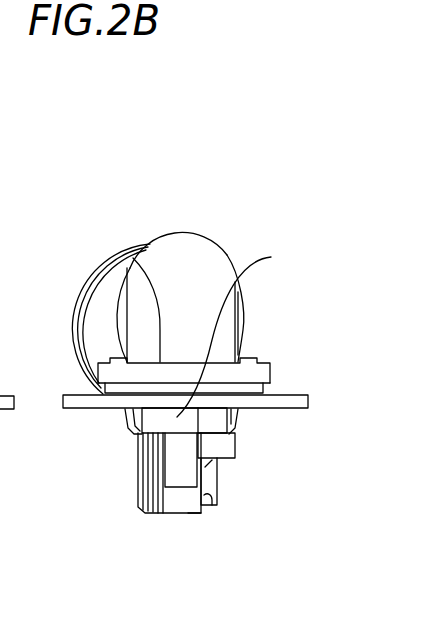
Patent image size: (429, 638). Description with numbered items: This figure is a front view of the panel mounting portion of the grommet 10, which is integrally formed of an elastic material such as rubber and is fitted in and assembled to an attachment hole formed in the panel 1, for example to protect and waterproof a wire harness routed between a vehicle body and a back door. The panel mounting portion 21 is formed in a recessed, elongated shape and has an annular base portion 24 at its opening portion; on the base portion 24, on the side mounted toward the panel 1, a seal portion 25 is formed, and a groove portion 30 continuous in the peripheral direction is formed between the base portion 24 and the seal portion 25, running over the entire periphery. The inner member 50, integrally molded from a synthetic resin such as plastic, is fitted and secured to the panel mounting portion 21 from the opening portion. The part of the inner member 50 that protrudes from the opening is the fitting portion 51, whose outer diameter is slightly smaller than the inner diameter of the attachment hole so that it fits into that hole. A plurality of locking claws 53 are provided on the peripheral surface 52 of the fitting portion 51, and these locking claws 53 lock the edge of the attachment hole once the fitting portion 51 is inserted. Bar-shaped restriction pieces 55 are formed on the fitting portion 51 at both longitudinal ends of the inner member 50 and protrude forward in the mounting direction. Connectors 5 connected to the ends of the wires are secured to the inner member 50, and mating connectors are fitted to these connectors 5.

The grommet 10 is at (218, 190).
The groove portion 30 is at (148, 251).
The panel mounting portion 21 is at (229, 254).
The peripheral surface 52 is at (236, 329).
The base portion 24 is at (270, 363).
The seal portion 25 is at (264, 392).
The panel 1 is at (309, 402).
The locking claws 53 is at (125, 437).
The inner member 50 is at (133, 437).
The fitting portion 51 is at (152, 423).
The restriction pieces 55 is at (175, 485).
The connectors 5 is at (192, 515).